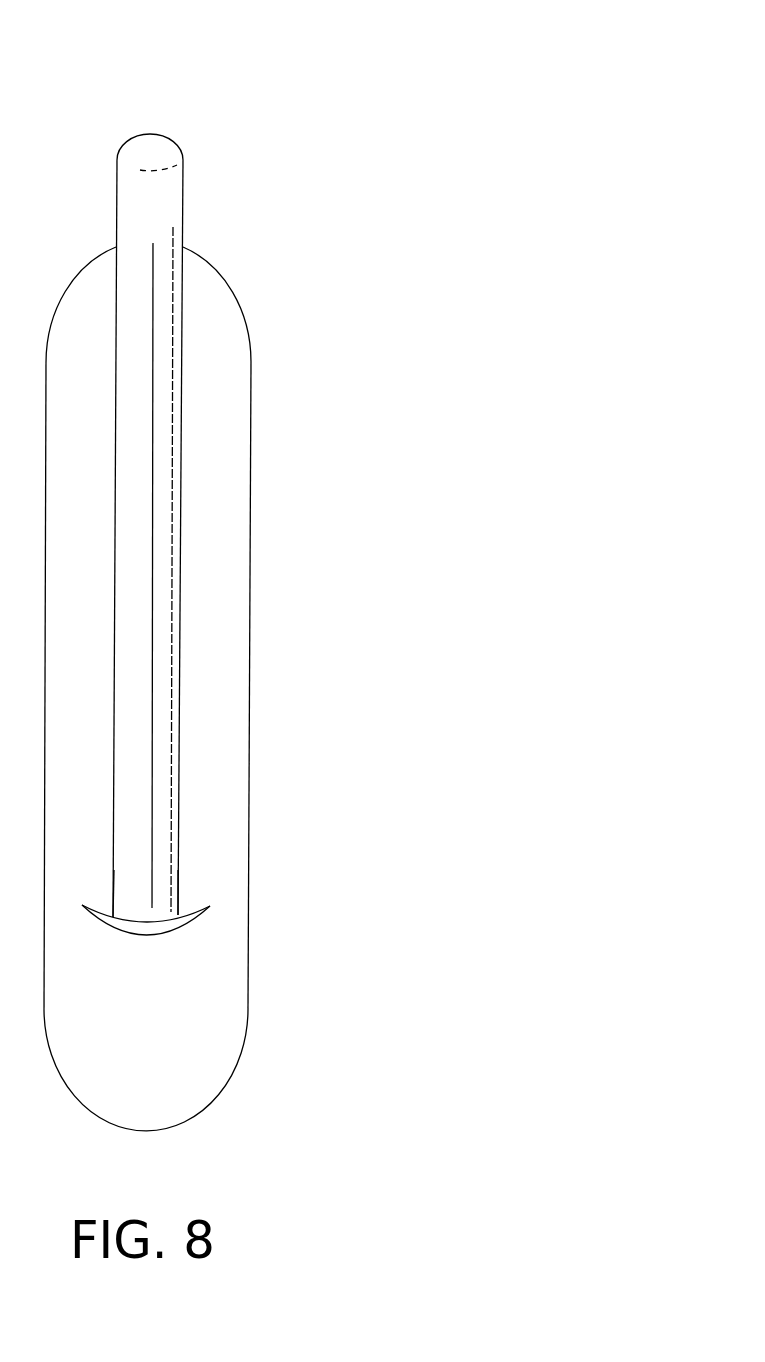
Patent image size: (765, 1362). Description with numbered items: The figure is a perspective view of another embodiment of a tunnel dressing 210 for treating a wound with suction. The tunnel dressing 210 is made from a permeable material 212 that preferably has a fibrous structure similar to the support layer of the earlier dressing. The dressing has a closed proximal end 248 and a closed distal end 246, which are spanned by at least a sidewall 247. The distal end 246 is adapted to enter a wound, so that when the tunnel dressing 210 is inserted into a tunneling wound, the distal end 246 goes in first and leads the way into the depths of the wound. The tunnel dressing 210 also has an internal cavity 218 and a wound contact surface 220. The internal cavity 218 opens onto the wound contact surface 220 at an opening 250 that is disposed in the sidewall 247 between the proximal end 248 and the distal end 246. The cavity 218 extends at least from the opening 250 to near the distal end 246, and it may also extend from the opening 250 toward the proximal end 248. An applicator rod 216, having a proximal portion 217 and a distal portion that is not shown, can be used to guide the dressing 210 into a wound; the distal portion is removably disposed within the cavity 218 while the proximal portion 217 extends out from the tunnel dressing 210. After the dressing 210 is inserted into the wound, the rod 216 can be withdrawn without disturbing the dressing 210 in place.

The tunnel dressing 210 is at (257, 570).
The permeable material 212 is at (150, 934).
The applicator rod 216 is at (273, 461).
The proximal portion 217 is at (149, 150).
The internal cavity 218 is at (185, 912).
The wound contact surface 220 is at (257, 652).
The distal end 246 is at (228, 1098).
The sidewall 247 is at (266, 641).
The proximal end 248 is at (226, 274).
The opening 250 is at (234, 908).